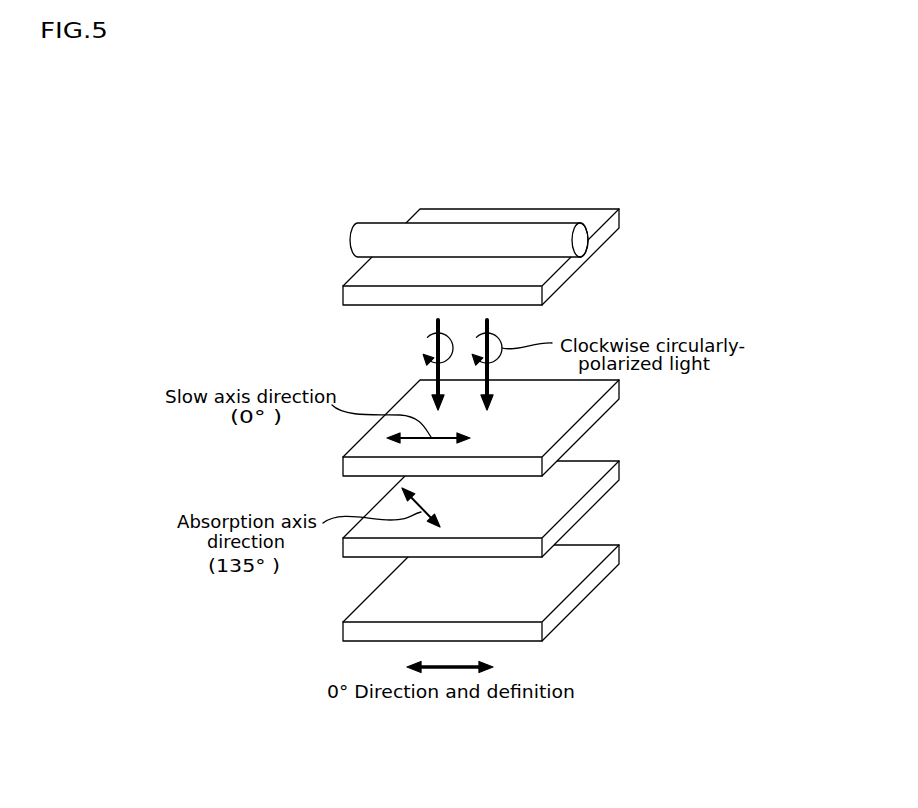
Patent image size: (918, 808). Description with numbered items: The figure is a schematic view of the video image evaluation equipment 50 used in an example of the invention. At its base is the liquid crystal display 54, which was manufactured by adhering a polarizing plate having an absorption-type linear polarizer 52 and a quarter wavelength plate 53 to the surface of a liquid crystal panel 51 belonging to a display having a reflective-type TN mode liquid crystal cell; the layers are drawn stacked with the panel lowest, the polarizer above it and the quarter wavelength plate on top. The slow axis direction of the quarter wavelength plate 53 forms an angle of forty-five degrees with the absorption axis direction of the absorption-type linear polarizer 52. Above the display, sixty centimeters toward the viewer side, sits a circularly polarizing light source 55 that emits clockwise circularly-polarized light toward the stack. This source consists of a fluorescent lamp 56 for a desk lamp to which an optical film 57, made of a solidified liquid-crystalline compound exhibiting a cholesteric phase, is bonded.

The video image evaluation equipment 50 is at (762, 210).
The liquid crystal panel 51 is at (583, 592).
The absorption-type linear polarizer 52 is at (580, 508).
The quarter wavelength plate 53 is at (585, 423).
The liquid crystal display 54 is at (685, 380).
The circularly polarizing light source 55 is at (685, 183).
The fluorescent lamp 56 is at (527, 222).
The optical film 57 is at (565, 270).